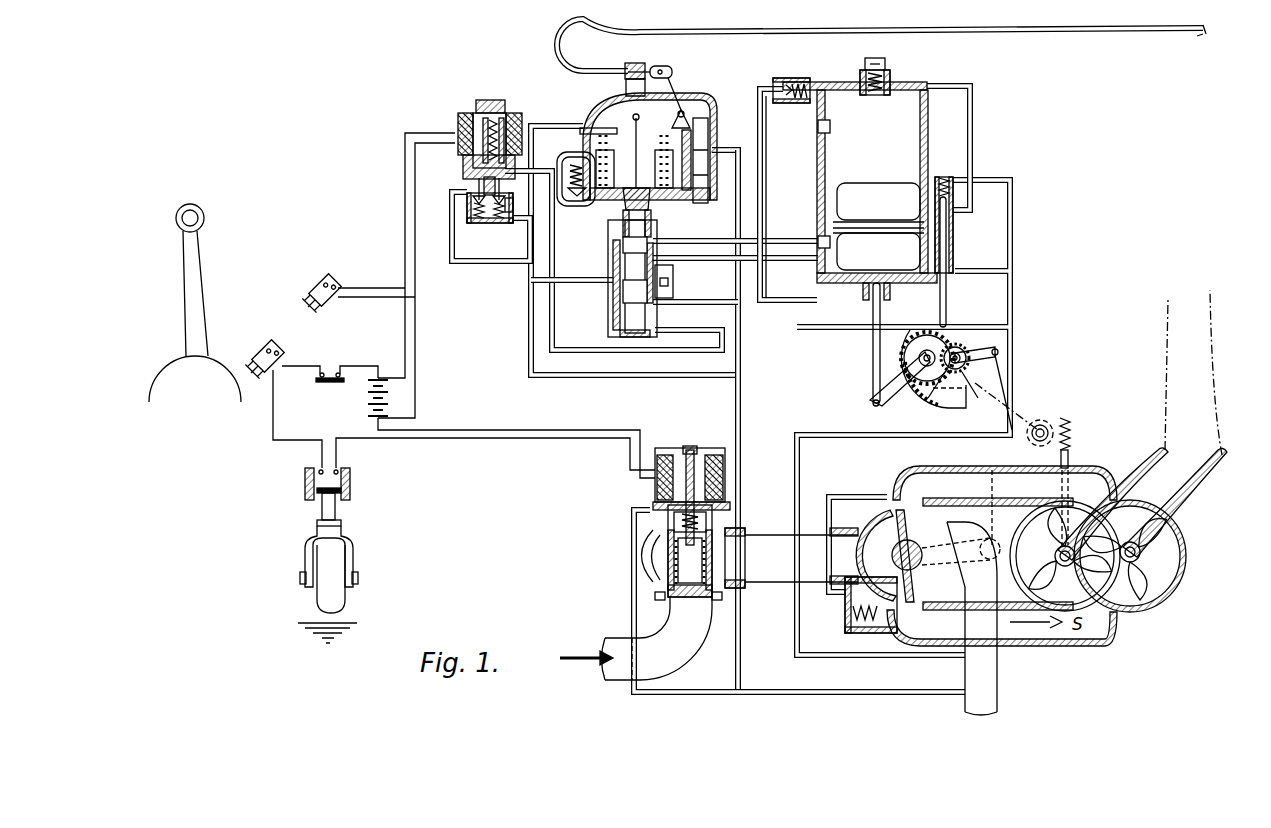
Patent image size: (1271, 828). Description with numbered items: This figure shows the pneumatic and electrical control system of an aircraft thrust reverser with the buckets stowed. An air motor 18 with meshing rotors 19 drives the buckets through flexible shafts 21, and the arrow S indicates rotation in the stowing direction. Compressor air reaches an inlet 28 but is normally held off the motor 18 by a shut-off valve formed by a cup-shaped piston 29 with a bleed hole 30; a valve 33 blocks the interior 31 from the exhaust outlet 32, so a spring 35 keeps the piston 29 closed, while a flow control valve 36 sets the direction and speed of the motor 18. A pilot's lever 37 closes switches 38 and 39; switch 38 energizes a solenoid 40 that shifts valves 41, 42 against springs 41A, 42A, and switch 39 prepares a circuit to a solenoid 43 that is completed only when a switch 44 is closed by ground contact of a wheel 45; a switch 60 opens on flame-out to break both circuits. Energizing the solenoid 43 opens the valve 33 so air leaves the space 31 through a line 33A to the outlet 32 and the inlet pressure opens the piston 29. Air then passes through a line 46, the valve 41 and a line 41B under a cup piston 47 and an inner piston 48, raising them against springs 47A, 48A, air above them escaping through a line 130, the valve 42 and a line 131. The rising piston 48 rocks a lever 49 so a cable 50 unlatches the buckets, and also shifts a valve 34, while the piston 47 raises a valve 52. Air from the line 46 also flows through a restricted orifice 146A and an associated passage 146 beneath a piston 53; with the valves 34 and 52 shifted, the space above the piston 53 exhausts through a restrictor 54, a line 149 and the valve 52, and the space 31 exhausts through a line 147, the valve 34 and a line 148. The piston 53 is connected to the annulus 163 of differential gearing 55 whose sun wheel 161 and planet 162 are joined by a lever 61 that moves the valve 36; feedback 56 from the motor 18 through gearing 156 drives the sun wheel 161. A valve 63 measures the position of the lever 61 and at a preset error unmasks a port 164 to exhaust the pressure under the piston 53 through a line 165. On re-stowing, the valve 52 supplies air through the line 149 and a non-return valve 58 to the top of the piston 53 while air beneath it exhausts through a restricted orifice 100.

The air motor 18 is at (1131, 618).
The meshing rotors 19 is at (1108, 580).
The flexible shafts 21 is at (1160, 466).
The inlet 28 is at (610, 646).
The cup shaped piston 29 is at (665, 556).
The bleed hole 30 is at (691, 600).
The interior of the piston 31 is at (700, 547).
The exhaust outlet 32 is at (998, 671).
The valve 33 is at (680, 524).
The line 33A is at (758, 680).
The valve 34 is at (710, 130).
The spring 35 is at (712, 574).
The flow control valve 36 is at (900, 545).
The pilot's lever 37 is at (200, 272).
The switch 38 is at (334, 278).
The switch 39 is at (276, 344).
The solenoid 40 is at (460, 120).
The valve 41 is at (467, 192).
The spring 41A is at (474, 212).
The line 41B is at (510, 264).
The valve 42 is at (508, 203).
The spring 42A is at (500, 223).
The solenoid 43 is at (667, 458).
The switch 44 is at (320, 480).
The wheel 45 is at (320, 598).
The line 46 is at (630, 376).
The cup piston 47 is at (598, 202).
The spring 47A is at (592, 196).
The piston 48 is at (616, 190).
The spring 48A is at (678, 112).
The lever 49 is at (684, 110).
The cable 50 is at (645, 34).
The valve 52 is at (640, 228).
The piston 53 is at (881, 191).
The restrictor 54 is at (830, 126).
The differential gearing 55 is at (933, 334).
The feedback 56 is at (1041, 424).
The non-return valve 58 is at (789, 78).
The switch 60 is at (329, 385).
The lever 61 is at (991, 351).
The valve 63 is at (955, 231).
The restricted orifice 100 is at (826, 238).
The line 130 is at (556, 124).
The line 131 is at (552, 168).
The conduit 146 is at (776, 261).
The restricted orifice 146A is at (668, 272).
The line 147 is at (736, 391).
The line 148 is at (736, 319).
The line 149 is at (766, 178).
The gearing 156 is at (1066, 418).
The sun wheel 161 is at (958, 345).
The planet 162 is at (927, 392).
The annulus 163 is at (944, 408).
The port 164 is at (950, 254).
The line 165 is at (989, 273).